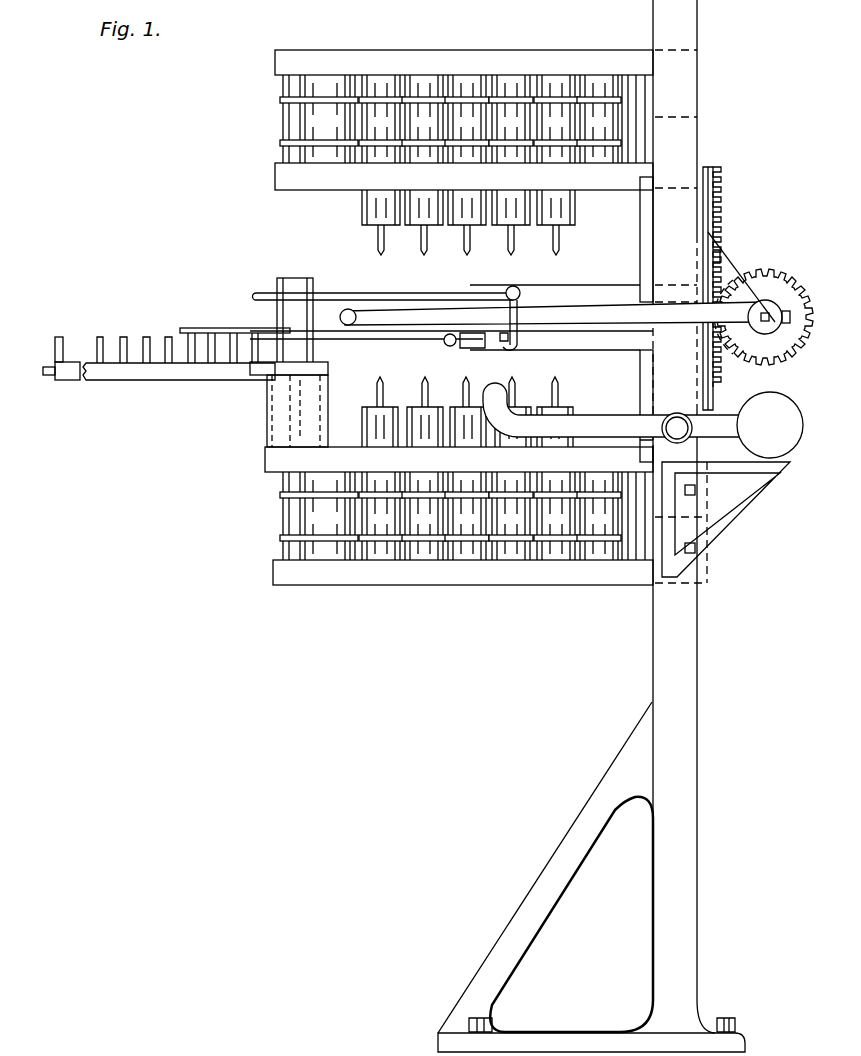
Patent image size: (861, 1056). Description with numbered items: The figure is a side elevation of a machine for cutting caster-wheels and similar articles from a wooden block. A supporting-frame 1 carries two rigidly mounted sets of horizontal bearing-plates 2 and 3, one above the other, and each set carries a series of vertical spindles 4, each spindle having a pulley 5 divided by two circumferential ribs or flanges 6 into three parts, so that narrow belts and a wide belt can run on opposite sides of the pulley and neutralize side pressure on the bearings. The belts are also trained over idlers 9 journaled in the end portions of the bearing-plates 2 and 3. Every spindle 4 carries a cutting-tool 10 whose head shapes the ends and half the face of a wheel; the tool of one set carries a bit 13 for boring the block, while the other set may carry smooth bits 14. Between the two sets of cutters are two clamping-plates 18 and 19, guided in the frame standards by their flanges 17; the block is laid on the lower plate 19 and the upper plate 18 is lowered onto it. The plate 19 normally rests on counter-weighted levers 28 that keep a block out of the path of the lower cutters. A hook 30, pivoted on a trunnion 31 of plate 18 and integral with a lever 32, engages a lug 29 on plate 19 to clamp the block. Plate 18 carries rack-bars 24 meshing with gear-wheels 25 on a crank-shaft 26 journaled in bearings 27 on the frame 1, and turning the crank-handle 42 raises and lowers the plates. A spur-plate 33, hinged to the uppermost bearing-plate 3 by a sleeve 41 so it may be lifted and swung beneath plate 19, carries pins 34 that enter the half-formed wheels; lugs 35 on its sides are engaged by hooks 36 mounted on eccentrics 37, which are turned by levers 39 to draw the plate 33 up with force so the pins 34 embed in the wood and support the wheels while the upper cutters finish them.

The supporting-frame 1 is at (693, 82).
The bearing-plates 2 is at (583, 58).
The bearing-plates 3 is at (280, 463).
The vertical spindles 4 is at (375, 208).
The pulley 5 is at (422, 82).
The circumferential ribs or flanges 6 is at (396, 98).
The idlers 9 is at (330, 116).
The cutting-tool 10 is at (378, 228).
The bit 13 is at (422, 380).
The smooth bits 14 is at (425, 238).
The flanges 17 is at (642, 258).
The clamping-plate 18 is at (565, 302).
The clamping-plate 19 is at (578, 350).
The rack-bars 24 is at (720, 190).
The gear-wheels 25 is at (785, 285).
The crank-shaft 26 is at (770, 330).
The bearings 27 is at (735, 268).
The counter-weighted levers 28 is at (653, 423).
The lug 29 is at (495, 352).
The hook 30 is at (520, 340).
The trunnion 31 is at (517, 290).
The lever 32 is at (400, 293).
The plate 33 is at (185, 380).
The pins 34 is at (167, 338).
The lugs 35 is at (52, 372).
The hooks 36 is at (435, 345).
The eccentrics 37 is at (464, 329).
The levers 39 is at (226, 330).
The sleeve 41 is at (268, 420).
The crank-handle 42 is at (355, 316).